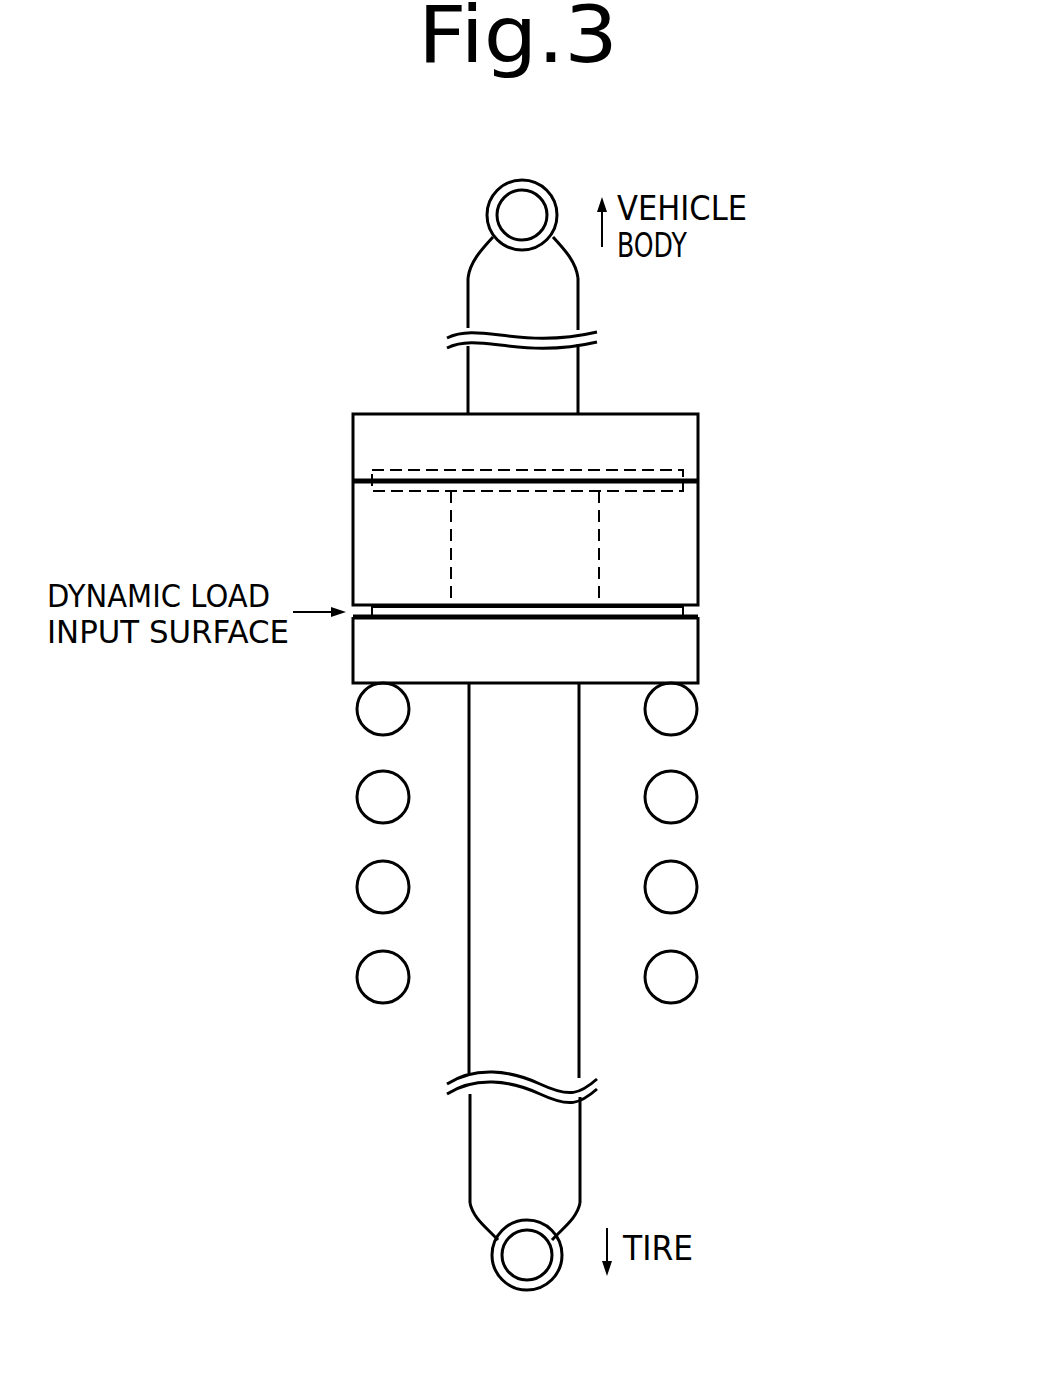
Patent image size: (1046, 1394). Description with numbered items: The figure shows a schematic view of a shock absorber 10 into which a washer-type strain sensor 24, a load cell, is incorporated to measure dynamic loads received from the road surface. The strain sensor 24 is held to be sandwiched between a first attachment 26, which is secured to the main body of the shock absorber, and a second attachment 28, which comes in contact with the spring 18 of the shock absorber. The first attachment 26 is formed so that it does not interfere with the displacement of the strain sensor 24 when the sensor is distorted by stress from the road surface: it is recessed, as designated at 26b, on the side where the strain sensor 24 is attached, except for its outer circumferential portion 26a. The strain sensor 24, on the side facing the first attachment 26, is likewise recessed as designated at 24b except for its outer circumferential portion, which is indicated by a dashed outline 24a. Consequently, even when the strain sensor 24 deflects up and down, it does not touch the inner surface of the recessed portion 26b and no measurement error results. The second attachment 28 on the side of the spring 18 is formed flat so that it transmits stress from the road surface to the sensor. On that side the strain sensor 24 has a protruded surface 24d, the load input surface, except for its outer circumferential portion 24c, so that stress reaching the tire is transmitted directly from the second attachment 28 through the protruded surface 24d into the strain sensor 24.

The shock absorber 10 is at (600, 380).
The spring 18 is at (680, 700).
The washer-type strain sensor 24 is at (335, 533).
The upper plate portion of elastic member 24a is at (687, 477).
The recessed portion of strain sensor 24b is at (645, 492).
The outer circumferential portion 24c is at (694, 622).
The protruded surface 24d is at (395, 622).
The first attachment 26 is at (712, 418).
The outer circumferential portion 26a is at (352, 494).
The recessed portion 26b is at (400, 478).
The second attachment 28 is at (680, 659).